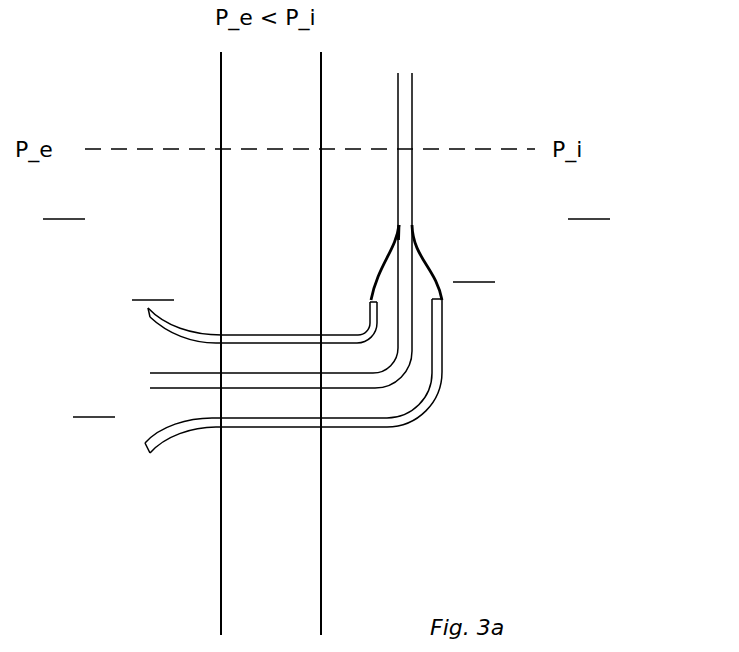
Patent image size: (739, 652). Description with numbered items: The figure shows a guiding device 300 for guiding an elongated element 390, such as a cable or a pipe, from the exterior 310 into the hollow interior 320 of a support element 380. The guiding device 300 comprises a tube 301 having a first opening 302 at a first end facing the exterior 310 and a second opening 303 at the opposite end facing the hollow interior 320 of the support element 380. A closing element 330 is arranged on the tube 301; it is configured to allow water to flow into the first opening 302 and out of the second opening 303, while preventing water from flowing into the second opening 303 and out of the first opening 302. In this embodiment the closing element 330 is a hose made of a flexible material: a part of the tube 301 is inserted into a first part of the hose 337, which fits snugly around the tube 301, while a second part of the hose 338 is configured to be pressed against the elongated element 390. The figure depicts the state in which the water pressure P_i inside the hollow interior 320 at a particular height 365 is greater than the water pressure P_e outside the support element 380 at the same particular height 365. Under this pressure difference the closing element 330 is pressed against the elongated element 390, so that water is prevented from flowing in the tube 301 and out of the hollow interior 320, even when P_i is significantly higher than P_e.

The guiding device 300 is at (254, 309).
The tube 301 is at (185, 430).
The first opening 302 is at (242, 383).
The second opening 303 is at (353, 342).
The exterior 310 is at (64, 207).
The hollow interior 320 is at (589, 207).
The closing element 330 is at (421, 253).
The first part of the hose 337 is at (369, 304).
The second part of the hose 338 is at (399, 228).
The particular height 365 is at (503, 148).
The support element 380 is at (220, 97).
The elongated element 390 is at (412, 97).